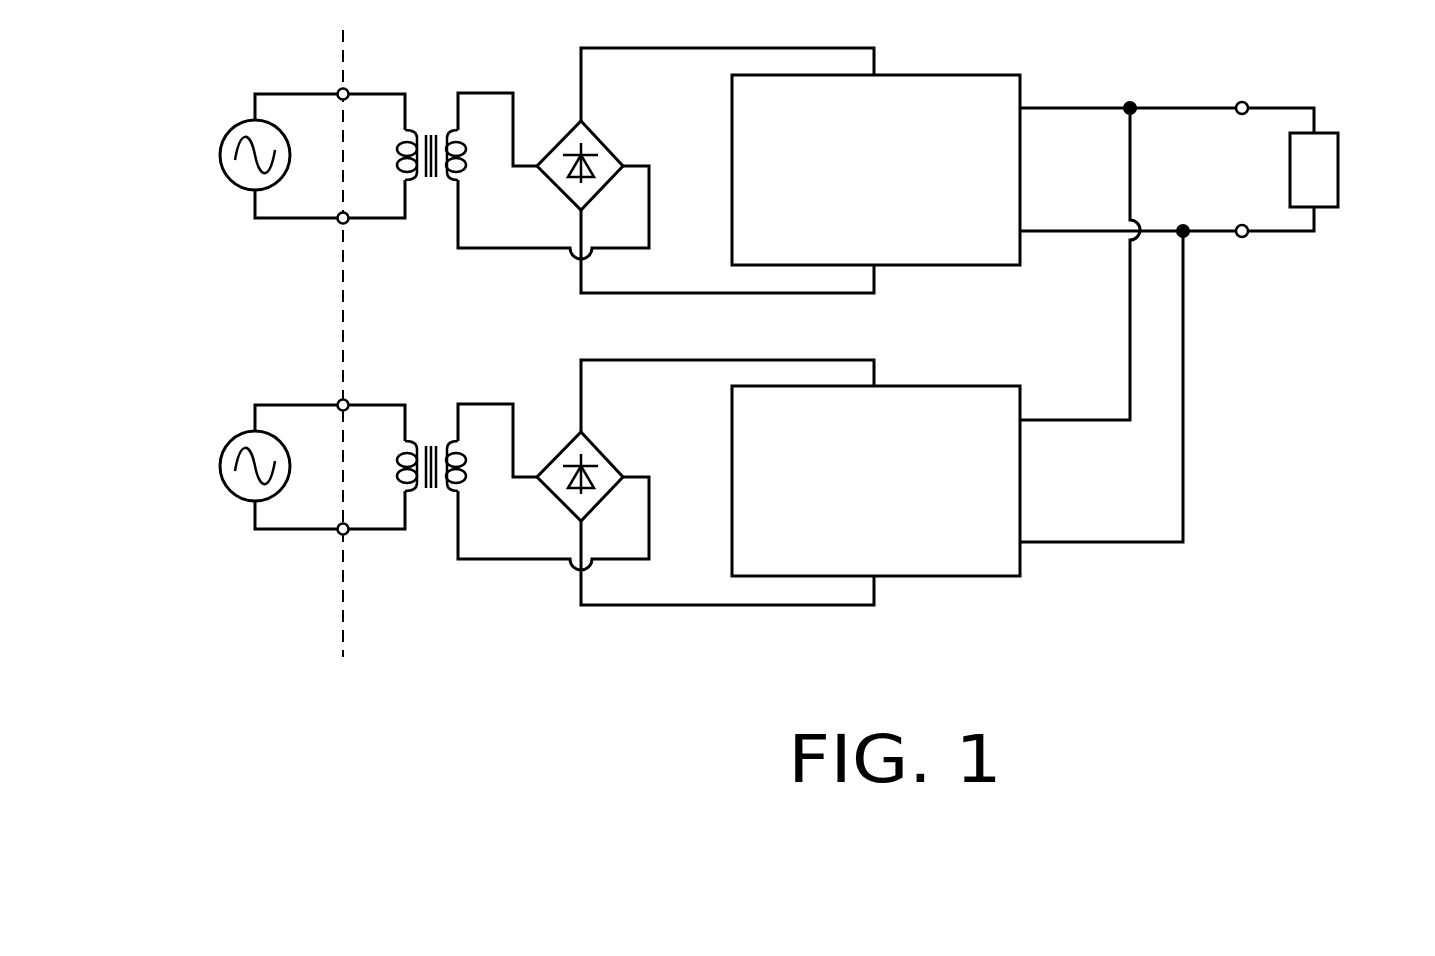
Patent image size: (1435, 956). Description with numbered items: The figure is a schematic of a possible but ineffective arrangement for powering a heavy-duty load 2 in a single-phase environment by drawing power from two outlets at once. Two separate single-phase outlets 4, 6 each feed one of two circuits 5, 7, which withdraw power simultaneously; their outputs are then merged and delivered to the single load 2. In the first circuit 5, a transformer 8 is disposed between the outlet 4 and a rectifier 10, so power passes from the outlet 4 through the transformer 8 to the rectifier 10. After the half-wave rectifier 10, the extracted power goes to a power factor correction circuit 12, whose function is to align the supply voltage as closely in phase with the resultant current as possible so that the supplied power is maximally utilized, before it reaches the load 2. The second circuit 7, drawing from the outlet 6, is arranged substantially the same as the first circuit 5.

The load 2 is at (1338, 165).
The single-phase outlet 4 is at (373, 39).
The first circuit 5 is at (1082, 60).
The single-phase outlet 6 is at (362, 358).
The second circuit 7 is at (1102, 600).
The transformer 8 is at (438, 136).
The rectifier 10 is at (548, 152).
The power factor correction circuit 12 is at (950, 76).